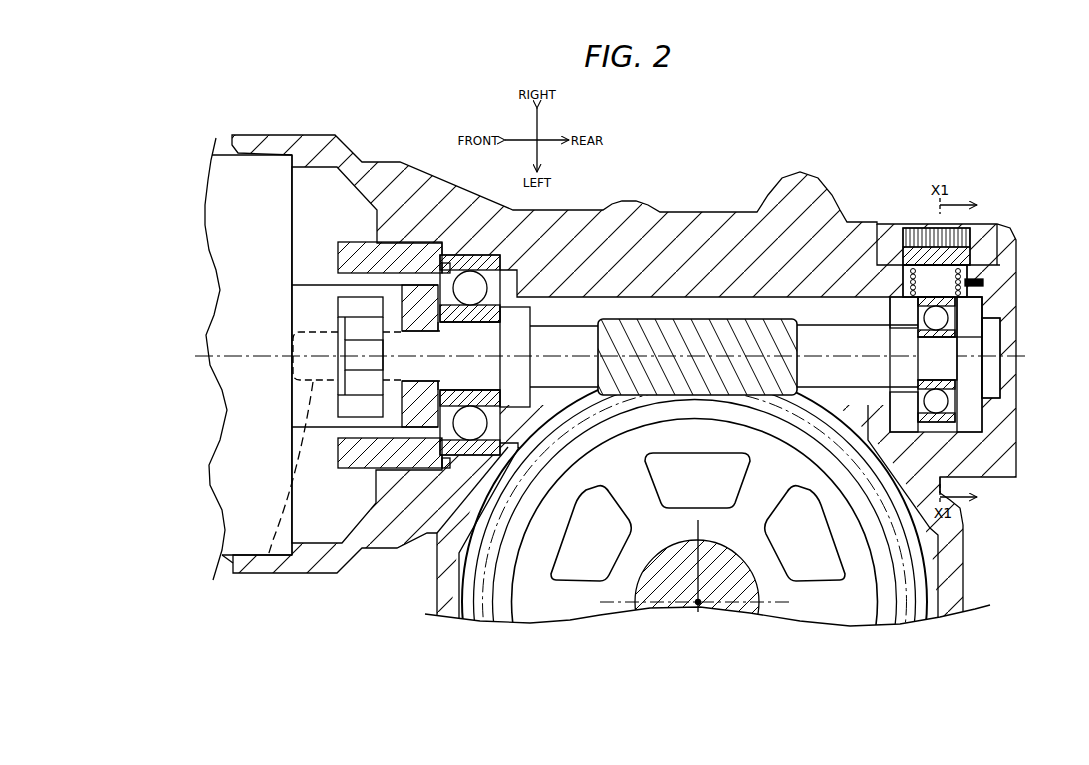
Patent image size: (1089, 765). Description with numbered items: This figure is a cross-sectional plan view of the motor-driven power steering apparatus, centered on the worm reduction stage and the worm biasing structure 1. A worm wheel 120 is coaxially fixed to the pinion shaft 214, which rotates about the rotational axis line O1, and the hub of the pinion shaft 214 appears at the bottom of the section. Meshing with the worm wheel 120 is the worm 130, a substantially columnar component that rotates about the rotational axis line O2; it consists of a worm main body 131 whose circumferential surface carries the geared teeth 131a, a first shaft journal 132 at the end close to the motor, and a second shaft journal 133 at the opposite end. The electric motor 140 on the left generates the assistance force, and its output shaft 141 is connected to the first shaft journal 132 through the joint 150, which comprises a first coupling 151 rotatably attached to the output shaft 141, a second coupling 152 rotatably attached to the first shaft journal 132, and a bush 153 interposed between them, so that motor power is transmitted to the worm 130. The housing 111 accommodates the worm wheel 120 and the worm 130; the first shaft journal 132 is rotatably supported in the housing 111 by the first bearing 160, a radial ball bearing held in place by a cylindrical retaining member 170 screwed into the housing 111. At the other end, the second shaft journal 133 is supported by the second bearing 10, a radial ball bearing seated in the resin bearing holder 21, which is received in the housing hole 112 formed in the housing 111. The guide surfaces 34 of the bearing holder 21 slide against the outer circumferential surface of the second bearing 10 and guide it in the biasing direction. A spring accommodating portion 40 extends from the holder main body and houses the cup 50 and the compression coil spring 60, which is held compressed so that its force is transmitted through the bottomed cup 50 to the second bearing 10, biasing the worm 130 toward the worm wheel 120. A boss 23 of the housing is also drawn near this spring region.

The worm biasing structure 1 is at (987, 159).
The second bearing 10 is at (960, 305).
The bearing holder 21 is at (988, 328).
The boss portion 23 is at (896, 220).
The guide surface 34 is at (972, 381).
The spring accommodating portion 40 is at (980, 283).
The cup 50 is at (985, 265).
The compression coil spring 60 is at (975, 240).
The housing 111 is at (621, 203).
The housing hole 112 is at (962, 430).
The worm wheel 120 is at (922, 553).
The worm 130 is at (747, 314).
The worm main body 131 is at (730, 318).
The geared teeth 131a is at (673, 340).
The first shaft journal 132 is at (430, 345).
The second shaft journal 133 is at (958, 418).
The electric motor 140 is at (226, 152).
The output shaft 141 is at (268, 559).
The joint 150 is at (365, 464).
The first coupling 151 is at (320, 434).
The second coupling 152 is at (401, 435).
The bush 153 is at (352, 421).
The first bearing 160 is at (473, 252).
The retaining member 170 is at (347, 248).
The pinion shaft 214 is at (673, 588).
The rotational axis line O1 is at (702, 604).
The rotational axis line O2 is at (625, 356).